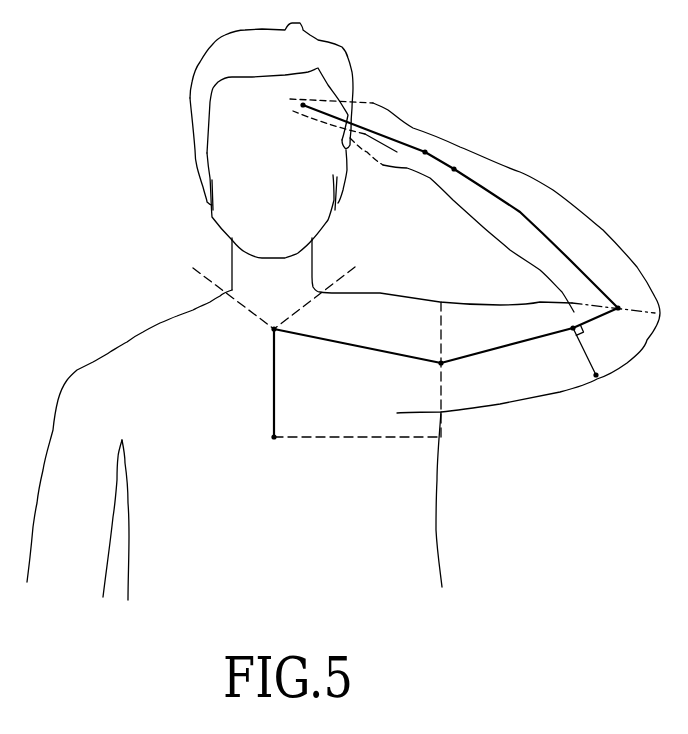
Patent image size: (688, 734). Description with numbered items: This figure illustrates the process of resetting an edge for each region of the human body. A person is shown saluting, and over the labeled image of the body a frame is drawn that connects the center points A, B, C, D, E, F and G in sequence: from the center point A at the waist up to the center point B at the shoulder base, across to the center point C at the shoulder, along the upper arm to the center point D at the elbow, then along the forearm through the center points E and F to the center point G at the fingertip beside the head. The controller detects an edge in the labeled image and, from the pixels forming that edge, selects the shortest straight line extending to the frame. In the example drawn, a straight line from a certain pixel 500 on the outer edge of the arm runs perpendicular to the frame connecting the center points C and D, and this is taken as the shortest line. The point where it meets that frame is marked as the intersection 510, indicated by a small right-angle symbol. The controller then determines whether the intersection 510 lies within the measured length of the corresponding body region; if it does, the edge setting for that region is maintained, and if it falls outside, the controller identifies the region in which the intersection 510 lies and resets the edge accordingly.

The pixel on the edge 500 is at (596, 377).
The intersection 510 is at (568, 326).
The center point A is at (273, 453).
The center point B is at (282, 345).
The center point C is at (449, 350).
The center point D is at (624, 294).
The center point E is at (448, 183).
The center point F is at (418, 168).
The center point G is at (303, 105).